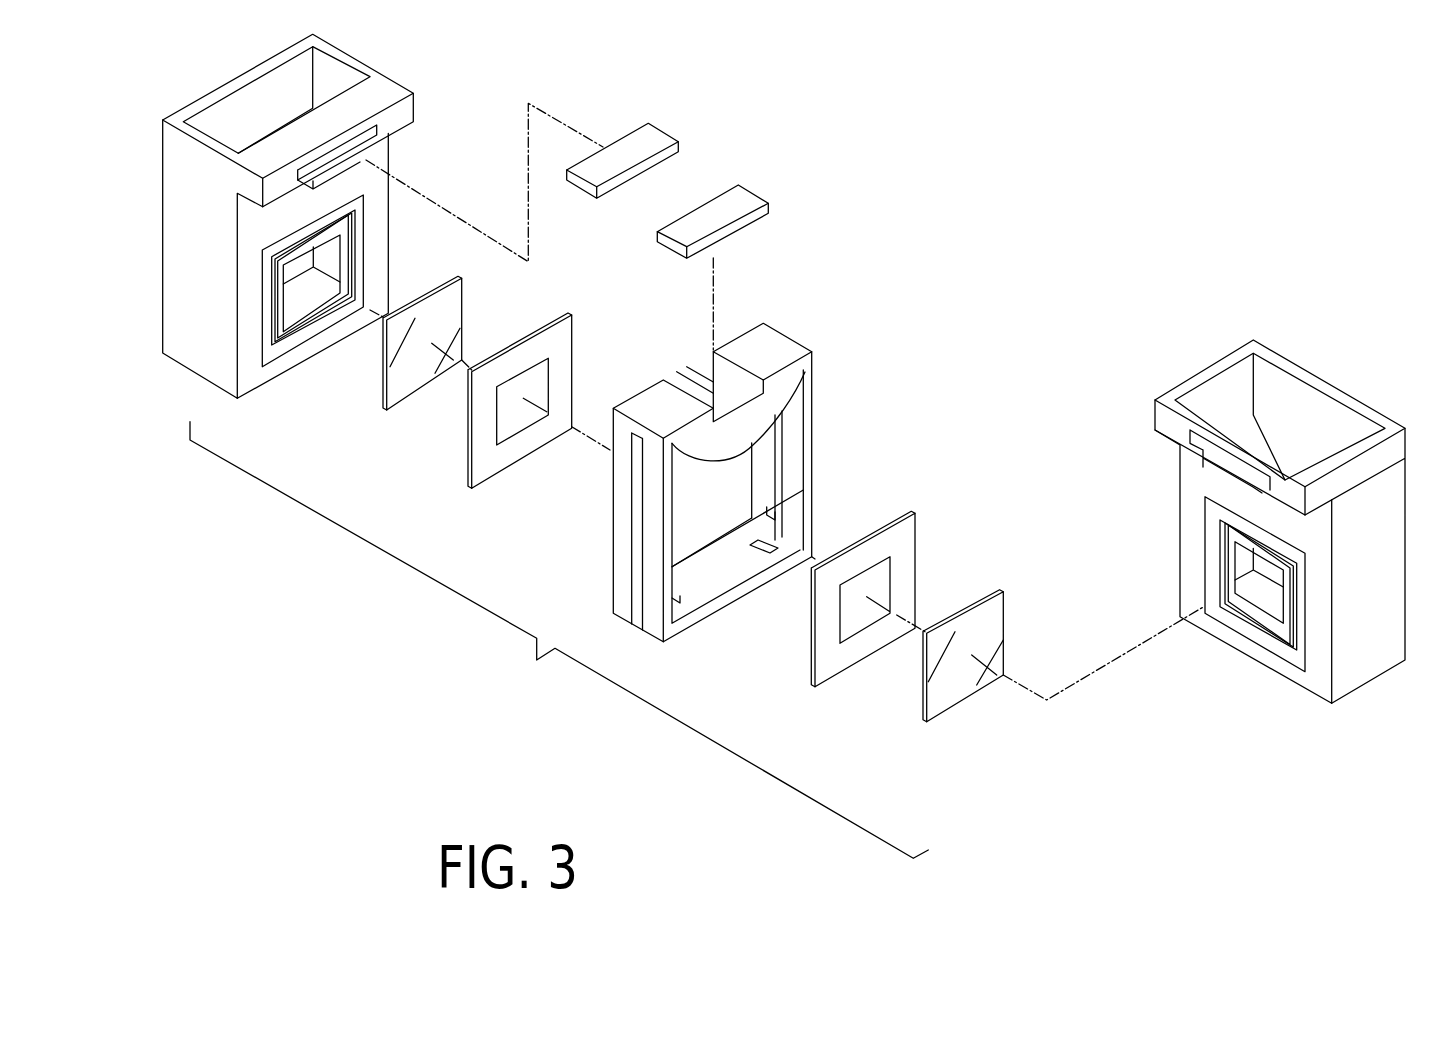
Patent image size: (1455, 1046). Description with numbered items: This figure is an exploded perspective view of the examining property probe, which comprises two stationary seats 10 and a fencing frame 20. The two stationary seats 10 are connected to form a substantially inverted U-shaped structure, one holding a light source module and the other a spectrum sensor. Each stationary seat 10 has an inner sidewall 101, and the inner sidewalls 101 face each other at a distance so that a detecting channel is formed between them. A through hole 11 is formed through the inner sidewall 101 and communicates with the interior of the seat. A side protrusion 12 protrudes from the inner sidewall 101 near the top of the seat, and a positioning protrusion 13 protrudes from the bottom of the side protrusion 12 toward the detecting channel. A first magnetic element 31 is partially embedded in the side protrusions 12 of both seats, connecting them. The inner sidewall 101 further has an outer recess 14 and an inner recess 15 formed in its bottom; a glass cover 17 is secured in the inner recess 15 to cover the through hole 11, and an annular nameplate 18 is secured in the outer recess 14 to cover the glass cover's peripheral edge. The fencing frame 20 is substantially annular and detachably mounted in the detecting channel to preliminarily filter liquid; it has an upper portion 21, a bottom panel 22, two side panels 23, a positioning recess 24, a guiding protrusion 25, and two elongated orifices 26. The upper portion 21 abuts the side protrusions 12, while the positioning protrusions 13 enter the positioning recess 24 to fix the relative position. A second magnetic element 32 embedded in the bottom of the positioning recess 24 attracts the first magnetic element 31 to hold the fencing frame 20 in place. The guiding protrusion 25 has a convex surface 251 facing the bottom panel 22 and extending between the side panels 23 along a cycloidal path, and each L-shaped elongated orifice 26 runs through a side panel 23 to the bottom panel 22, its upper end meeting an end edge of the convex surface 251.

The stationary seat 10 is at (768, 387).
The inner sidewall 101 is at (377, 235).
The through hole 11 is at (1283, 607).
The side protrusion 12 is at (400, 118).
The positioning protrusion 13 is at (338, 150).
The outer recess 14 is at (1238, 623).
The inner recess 15 is at (1227, 578).
The glass cover 17 is at (452, 303).
The nameplate 18 is at (560, 348).
The fencing frame 20 is at (751, 449).
The upper portion 21 is at (772, 340).
The bottom panel 22 is at (720, 588).
The side panel 23 is at (696, 511).
The positioning recess 24 is at (748, 398).
The guiding protrusion 25 is at (752, 425).
The convex surface 251 is at (738, 458).
The elongated orifice 26 is at (636, 593).
The first magnetic element 31 is at (650, 138).
The second magnetic element 32 is at (740, 200).